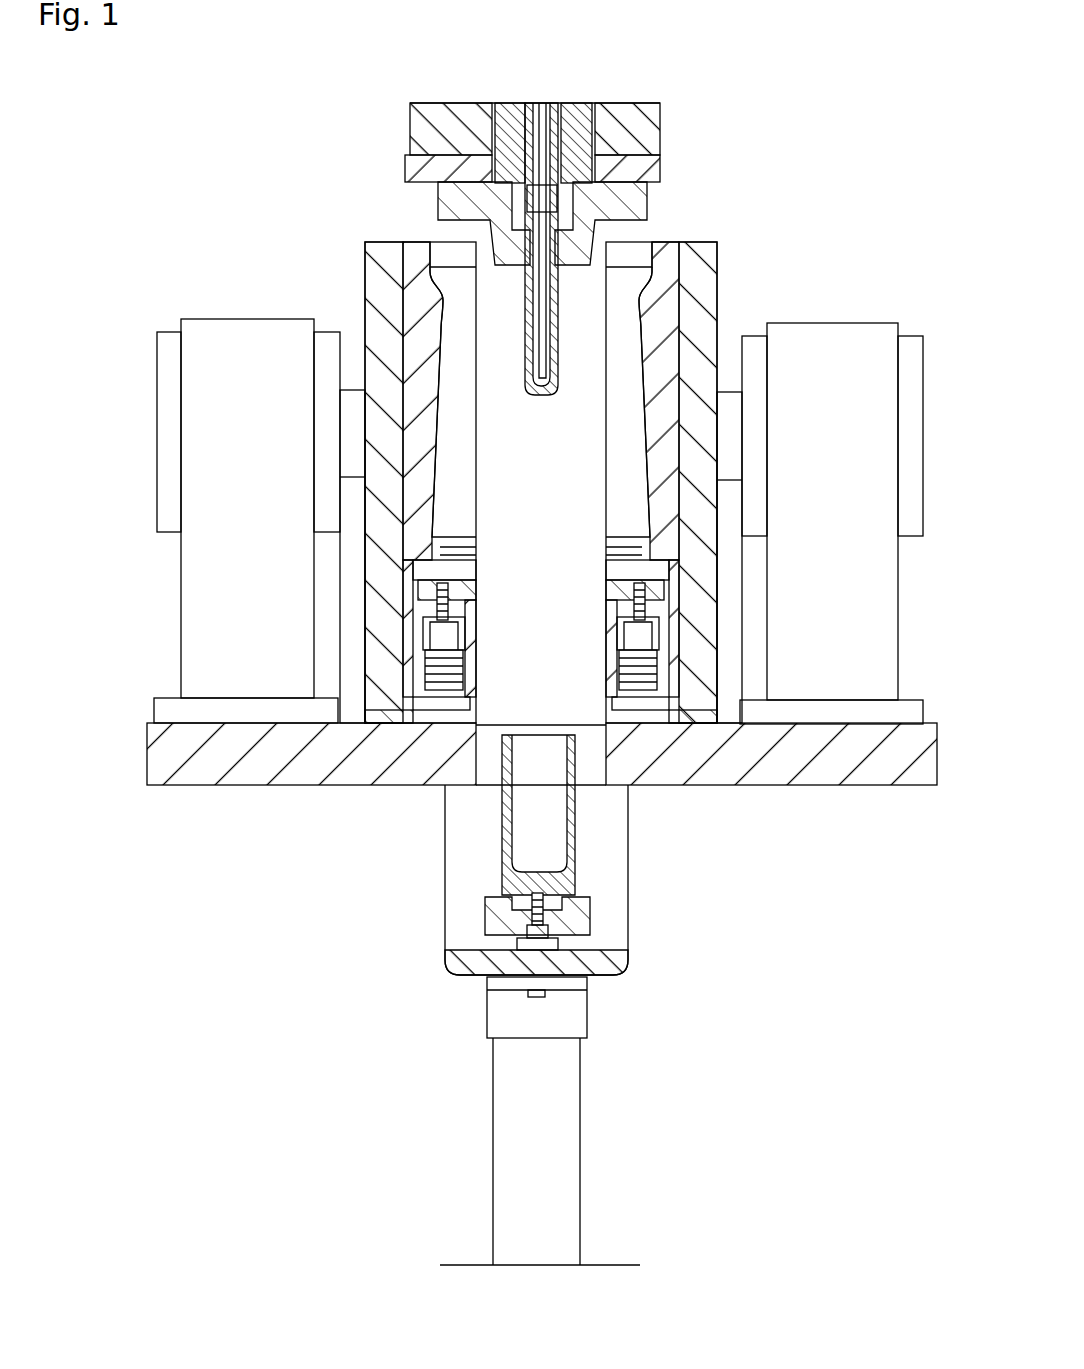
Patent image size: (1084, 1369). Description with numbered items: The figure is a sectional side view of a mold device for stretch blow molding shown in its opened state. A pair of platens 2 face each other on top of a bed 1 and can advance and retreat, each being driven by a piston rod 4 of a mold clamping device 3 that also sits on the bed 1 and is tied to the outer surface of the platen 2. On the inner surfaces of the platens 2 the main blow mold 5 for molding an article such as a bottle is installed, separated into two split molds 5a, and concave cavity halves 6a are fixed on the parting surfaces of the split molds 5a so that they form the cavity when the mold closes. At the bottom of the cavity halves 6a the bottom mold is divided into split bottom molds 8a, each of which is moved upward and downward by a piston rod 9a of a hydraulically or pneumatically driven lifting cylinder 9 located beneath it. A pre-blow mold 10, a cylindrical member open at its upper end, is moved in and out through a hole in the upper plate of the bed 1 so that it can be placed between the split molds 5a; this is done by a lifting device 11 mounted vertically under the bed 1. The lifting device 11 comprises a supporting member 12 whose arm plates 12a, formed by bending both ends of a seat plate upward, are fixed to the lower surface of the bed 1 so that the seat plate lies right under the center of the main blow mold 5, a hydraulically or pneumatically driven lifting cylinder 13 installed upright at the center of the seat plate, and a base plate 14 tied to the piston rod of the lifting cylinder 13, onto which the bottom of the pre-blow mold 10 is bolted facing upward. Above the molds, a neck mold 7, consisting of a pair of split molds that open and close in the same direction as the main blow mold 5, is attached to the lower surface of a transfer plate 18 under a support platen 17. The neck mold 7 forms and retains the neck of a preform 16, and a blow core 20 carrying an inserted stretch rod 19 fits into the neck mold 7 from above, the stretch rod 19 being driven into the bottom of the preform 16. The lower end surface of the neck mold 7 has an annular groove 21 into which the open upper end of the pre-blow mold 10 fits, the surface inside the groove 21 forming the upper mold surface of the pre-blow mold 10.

The bed 1 is at (190, 765).
The platen 2 is at (385, 285).
The mold clamping device 3 is at (208, 339).
The piston rod 4 is at (355, 413).
The main blow mold 5 is at (400, 240).
The split mold 5a is at (418, 460).
The cavity half 6a is at (453, 520).
The neck mold 7 is at (640, 212).
The split bottom mold 8a is at (430, 568).
The piston rod 9a is at (425, 612).
The lifting cylinder 9 is at (420, 657).
The pre-blow mold 10 is at (495, 812).
The lifting device 11 is at (476, 1032).
The supporting member 12 is at (615, 962).
The arm plate 12a is at (607, 855).
The lifting cylinder 13 is at (555, 1130).
The base plate 14 is at (487, 917).
The preform 16 is at (563, 287).
The support platen 17 is at (636, 122).
The transfer plate 18 is at (647, 170).
The stretch rod 19 is at (540, 350).
The blow core 20 is at (573, 137).
The annular groove 21 is at (585, 222).